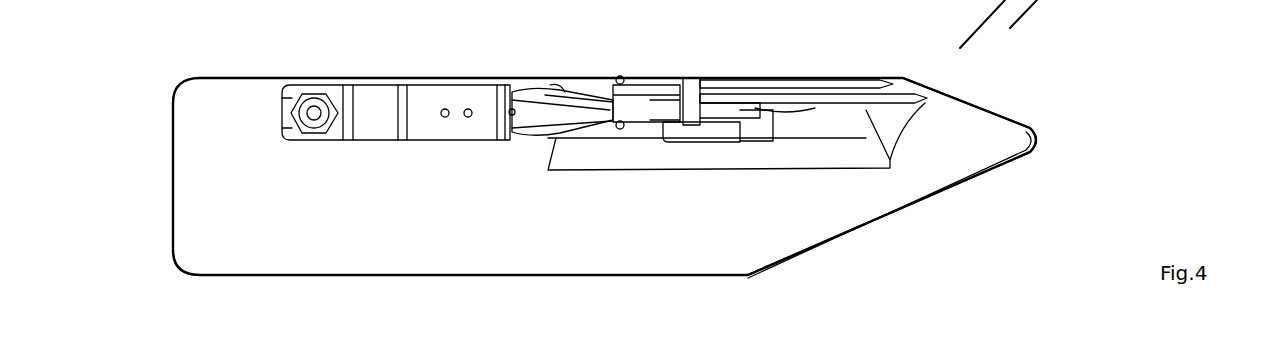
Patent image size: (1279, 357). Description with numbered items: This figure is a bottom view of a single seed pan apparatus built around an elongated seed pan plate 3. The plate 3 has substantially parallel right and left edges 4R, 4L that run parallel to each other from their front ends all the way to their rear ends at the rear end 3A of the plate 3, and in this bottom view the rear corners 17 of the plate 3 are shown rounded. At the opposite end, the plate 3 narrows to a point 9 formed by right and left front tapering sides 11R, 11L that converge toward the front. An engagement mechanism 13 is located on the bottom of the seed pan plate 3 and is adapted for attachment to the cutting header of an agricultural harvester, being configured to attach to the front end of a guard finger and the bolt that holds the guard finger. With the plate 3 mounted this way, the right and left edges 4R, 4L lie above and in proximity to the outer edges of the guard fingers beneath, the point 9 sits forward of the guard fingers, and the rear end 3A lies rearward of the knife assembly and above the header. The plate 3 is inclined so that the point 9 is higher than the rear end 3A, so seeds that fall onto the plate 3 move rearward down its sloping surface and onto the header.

The seed pan plate 3 is at (358, 277).
The rear end of the seed pan plate 3A is at (173, 155).
The rear corners 17 is at (183, 277).
The left edge 4L is at (460, 277).
The right edge 4R is at (796, 63).
The left front tapering side 11L is at (912, 212).
The right front tapering side 11R is at (972, 102).
The point 9 is at (1040, 138).
The engagement mechanism 13 is at (457, 98).